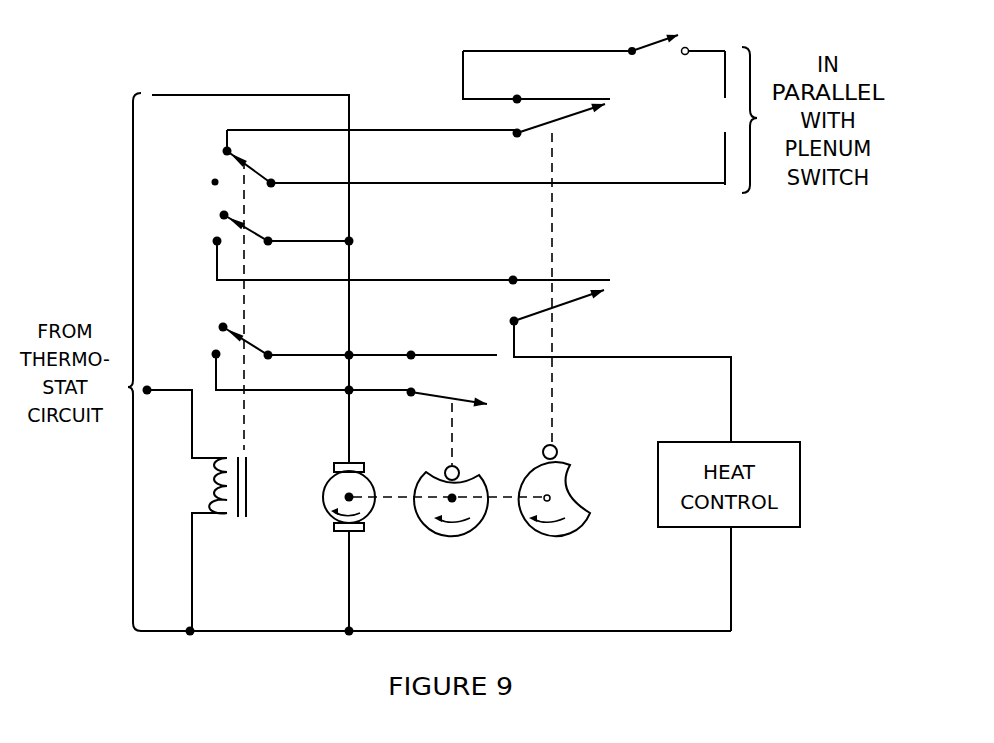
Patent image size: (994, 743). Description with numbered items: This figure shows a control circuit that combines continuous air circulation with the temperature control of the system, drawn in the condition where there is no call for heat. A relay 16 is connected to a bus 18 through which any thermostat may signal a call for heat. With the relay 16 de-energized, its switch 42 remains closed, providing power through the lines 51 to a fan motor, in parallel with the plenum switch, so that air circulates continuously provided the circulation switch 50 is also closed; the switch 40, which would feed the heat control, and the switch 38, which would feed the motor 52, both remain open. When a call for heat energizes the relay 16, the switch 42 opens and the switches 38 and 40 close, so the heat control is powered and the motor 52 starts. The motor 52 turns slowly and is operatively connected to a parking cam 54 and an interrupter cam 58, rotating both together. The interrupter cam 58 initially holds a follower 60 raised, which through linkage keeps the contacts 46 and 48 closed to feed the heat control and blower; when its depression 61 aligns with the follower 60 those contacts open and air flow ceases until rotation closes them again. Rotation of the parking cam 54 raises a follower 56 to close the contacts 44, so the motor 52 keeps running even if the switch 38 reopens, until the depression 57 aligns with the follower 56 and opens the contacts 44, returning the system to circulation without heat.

The relay 16 is at (227, 516).
The bus 18 is at (149, 390).
The switch 38 is at (272, 354).
The switch 40 is at (272, 240).
The switch 42 is at (274, 181).
The contacts 44 is at (411, 391).
The contact 46 is at (514, 321).
The contact 48 is at (517, 133).
The circulation switch 50 is at (687, 47).
The lines 51 is at (721, 118).
The motor 52 is at (333, 518).
The parking cam 54 is at (424, 527).
The follower 56 is at (458, 477).
The depression 57 is at (433, 475).
The interrupter cam 58 is at (526, 527).
The follower 60 is at (556, 450).
The depression 61 is at (575, 488).